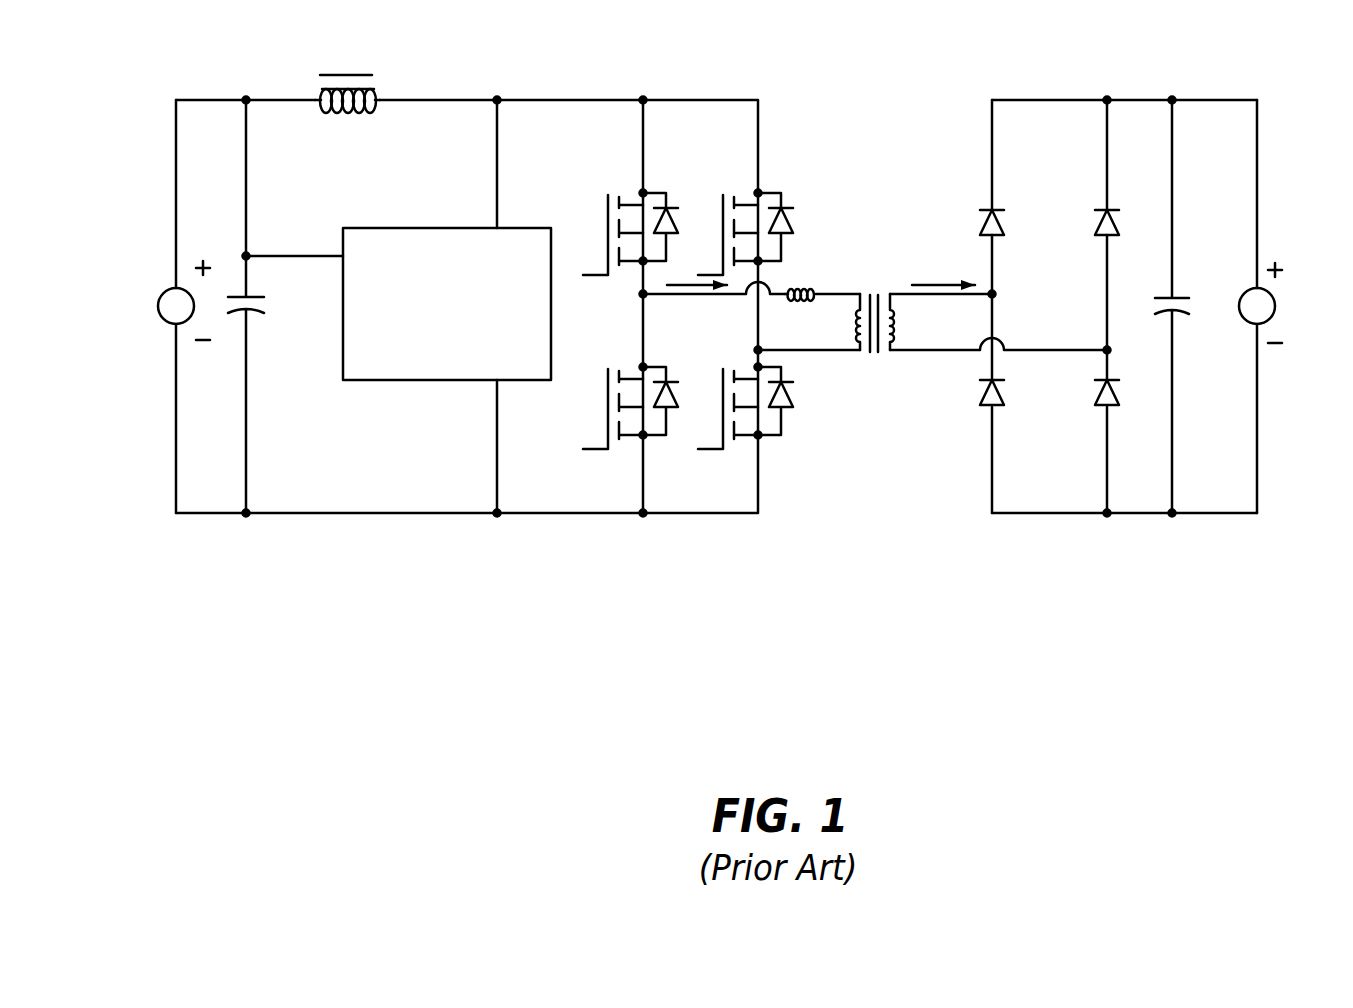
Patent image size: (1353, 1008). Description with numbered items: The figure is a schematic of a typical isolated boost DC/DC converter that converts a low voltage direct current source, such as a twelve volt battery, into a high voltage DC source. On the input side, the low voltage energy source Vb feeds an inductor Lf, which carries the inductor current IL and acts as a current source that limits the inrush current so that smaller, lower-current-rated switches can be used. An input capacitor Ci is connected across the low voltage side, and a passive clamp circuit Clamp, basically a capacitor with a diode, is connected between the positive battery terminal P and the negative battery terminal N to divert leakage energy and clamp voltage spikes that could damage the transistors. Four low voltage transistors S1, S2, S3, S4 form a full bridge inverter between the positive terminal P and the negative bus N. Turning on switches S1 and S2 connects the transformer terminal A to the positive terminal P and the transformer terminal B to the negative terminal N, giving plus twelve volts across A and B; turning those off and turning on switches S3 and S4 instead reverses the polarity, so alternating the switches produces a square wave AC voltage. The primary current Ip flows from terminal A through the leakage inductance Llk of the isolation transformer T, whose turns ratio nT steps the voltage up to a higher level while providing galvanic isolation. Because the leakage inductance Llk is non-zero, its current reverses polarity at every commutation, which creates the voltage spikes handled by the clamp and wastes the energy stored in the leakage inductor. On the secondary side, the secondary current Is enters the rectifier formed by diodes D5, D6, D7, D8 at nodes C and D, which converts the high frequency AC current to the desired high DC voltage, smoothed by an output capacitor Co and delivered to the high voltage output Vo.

The low voltage energy source Vb is at (161, 306).
The inductor Lf is at (326, 132).
The inductor current IL is at (344, 164).
The input capacitor Ci is at (285, 306).
The passive clamp circuit Clamp is at (447, 306).
The positive battery terminal P is at (494, 70).
The negative battery terminal N is at (496, 551).
The low voltage transistor S1 is at (622, 233).
The low voltage transistor S2 is at (738, 407).
The low voltage transistor S3 is at (622, 407).
The low voltage transistor S4 is at (738, 233).
The transformer terminal A is at (699, 303).
The transformer terminal B is at (791, 343).
The primary current Ip is at (697, 317).
The leakage inductance Llk is at (822, 271).
The isolation transformer T is at (875, 304).
The transformer turns ratio nT is at (869, 384).
The secondary current Is is at (943, 259).
The rectifier node C is at (958, 303).
The rectifier node D is at (1018, 348).
The diode D5 is at (1013, 197).
The diode D6 is at (1128, 431).
The diode D7 is at (1013, 403).
The diode D8 is at (1128, 225).
The output capacitor Co is at (1193, 306).
The output voltage source Vo is at (1287, 306).